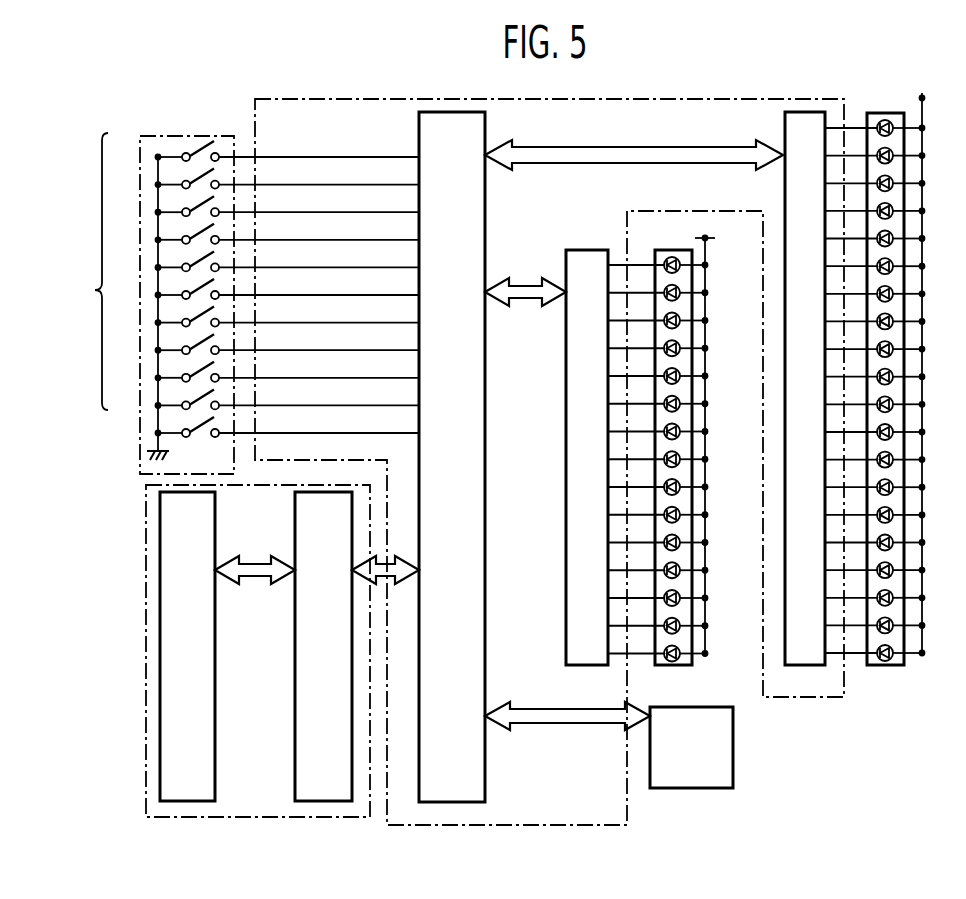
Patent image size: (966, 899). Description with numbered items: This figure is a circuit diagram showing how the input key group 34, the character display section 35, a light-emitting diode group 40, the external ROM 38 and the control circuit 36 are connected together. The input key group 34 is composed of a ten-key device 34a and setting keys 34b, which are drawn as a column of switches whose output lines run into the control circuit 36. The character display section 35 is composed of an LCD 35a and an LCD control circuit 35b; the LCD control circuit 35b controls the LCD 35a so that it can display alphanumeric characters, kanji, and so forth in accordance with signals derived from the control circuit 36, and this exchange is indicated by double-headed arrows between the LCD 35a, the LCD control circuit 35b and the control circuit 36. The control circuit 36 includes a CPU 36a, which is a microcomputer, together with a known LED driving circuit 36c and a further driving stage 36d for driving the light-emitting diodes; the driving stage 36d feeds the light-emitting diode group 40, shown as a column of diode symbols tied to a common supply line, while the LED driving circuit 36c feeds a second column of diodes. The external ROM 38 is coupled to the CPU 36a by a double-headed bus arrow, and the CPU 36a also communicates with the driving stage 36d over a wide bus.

The input key group 34 is at (238, 281).
The ten-key device 34a is at (238, 303).
The setting keys 34b is at (197, 438).
The character display section 35 is at (229, 651).
The LCD 35a is at (160, 612).
The LCD control circuit 35b is at (295, 690).
The control circuit 36 is at (549, 489).
The CPU 36a is at (485, 771).
The LED driving circuit 36c is at (566, 570).
The LED driver 36d is at (785, 572).
The external ROM 38 is at (735, 756).
The light-emitting diode group 40 is at (889, 667).